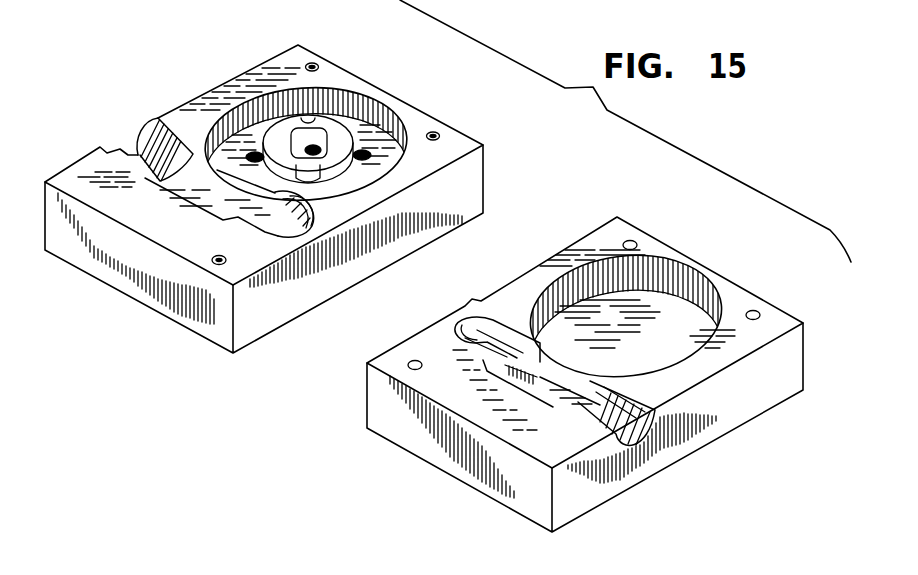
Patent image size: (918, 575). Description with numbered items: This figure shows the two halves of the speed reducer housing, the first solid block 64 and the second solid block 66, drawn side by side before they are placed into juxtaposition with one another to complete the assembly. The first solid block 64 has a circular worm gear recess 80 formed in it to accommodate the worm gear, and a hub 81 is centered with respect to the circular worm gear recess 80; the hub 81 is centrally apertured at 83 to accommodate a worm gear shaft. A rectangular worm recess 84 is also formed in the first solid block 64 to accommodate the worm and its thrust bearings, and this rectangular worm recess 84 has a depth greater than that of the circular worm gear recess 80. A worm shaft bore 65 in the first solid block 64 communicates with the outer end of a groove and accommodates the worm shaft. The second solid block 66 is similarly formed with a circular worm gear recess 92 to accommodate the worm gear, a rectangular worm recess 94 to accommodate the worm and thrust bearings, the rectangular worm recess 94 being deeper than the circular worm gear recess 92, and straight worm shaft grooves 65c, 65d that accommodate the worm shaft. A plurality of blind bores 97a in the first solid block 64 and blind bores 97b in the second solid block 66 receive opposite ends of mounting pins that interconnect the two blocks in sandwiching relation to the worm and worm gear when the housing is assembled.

The first solid block 64 is at (236, 70).
The worm shaft bore 65 is at (165, 125).
The blind bores 97a is at (316, 65).
The hub 81 is at (332, 125).
The circular worm gear recess 80 is at (373, 140).
The central aperture 83 is at (412, 213).
The rectangular worm recess 84 is at (227, 205).
The second solid block 66 is at (688, 245).
The blind bores 97b is at (635, 244).
The circular worm gear recess 92 is at (677, 314).
The straight worm shaft groove 65c is at (476, 313).
The rectangular worm recess 94 is at (547, 378).
The straight worm shaft groove 65d is at (648, 452).